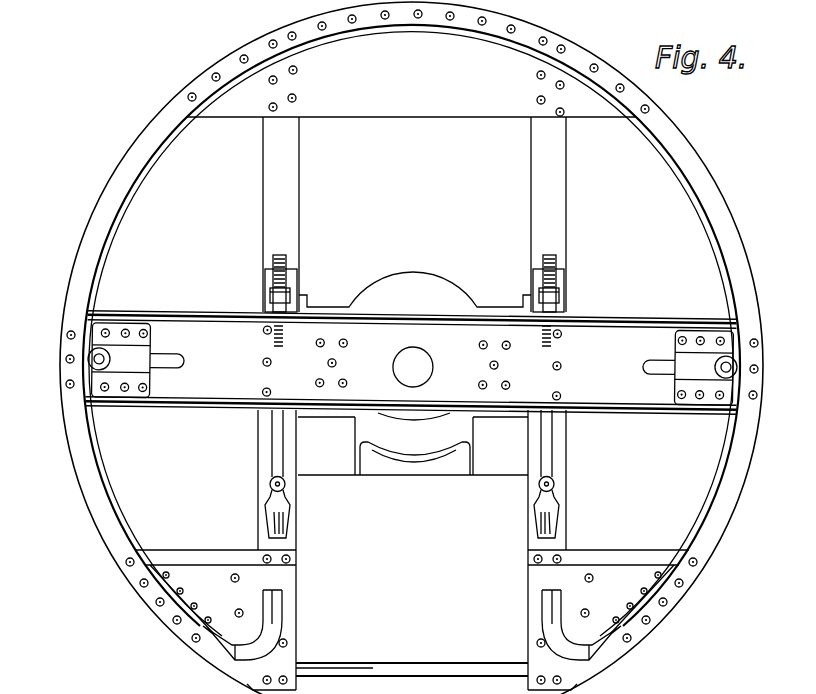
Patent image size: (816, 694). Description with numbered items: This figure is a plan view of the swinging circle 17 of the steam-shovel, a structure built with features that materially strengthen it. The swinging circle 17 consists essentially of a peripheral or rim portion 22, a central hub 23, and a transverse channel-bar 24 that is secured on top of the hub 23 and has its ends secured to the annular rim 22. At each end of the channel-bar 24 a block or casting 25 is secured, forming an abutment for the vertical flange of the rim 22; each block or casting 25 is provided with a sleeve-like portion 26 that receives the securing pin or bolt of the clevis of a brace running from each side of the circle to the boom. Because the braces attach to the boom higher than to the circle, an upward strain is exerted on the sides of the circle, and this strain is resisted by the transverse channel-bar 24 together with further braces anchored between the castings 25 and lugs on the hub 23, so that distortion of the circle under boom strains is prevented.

The annular ring frame 17 is at (672, 129).
The peripheral or rim portion 22 is at (709, 217).
The central hub 23 is at (475, 425).
The transverse channel-bar 24 is at (633, 406).
The block or casting 25 is at (133, 352).
The sleeve-like portion 26 is at (97, 360).